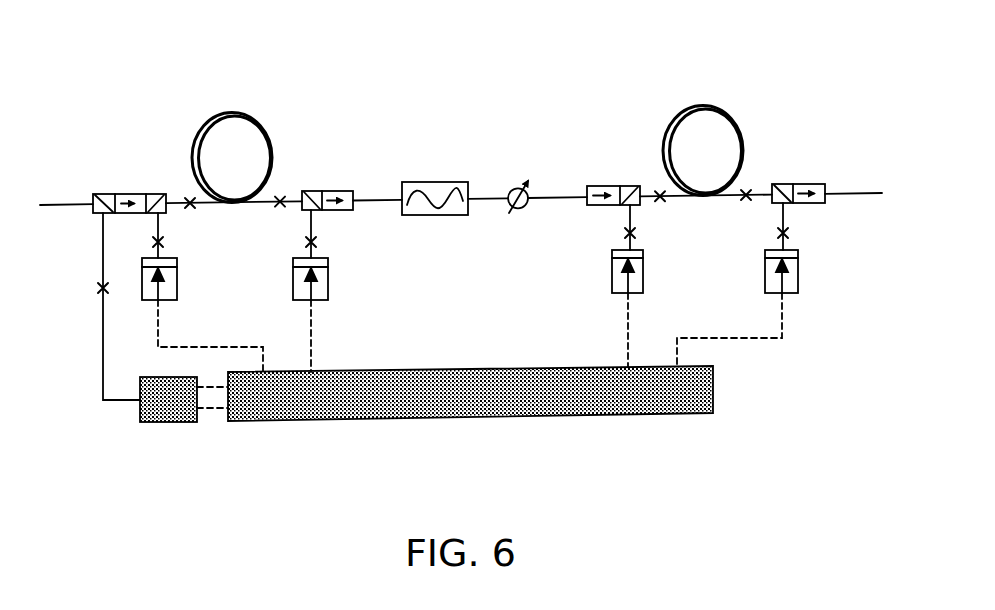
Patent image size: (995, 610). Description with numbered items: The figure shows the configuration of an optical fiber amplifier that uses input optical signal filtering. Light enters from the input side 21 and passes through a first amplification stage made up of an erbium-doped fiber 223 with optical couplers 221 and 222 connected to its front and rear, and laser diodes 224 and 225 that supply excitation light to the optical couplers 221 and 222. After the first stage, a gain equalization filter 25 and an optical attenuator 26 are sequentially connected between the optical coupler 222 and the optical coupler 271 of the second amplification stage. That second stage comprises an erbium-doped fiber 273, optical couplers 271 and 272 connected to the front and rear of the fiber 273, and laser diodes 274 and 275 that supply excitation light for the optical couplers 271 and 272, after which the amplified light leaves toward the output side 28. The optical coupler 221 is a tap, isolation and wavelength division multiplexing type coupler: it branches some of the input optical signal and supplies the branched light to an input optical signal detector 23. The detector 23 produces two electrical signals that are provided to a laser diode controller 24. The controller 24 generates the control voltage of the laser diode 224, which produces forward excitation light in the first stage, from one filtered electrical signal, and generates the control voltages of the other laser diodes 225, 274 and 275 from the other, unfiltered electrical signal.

The input optical fiber 21 is at (44, 203).
The optical coupler 221 is at (143, 193).
The optical coupler 222 is at (330, 190).
The erbium-doped fiber 223 is at (277, 147).
The laser diode 224 is at (177, 283).
The laser diode 225 is at (328, 282).
The gain equalization filter 25 is at (436, 182).
The optical attenuator 26 is at (523, 210).
The optical coupler 271 is at (612, 185).
The optical coupler 272 is at (800, 183).
The erbium-doped fiber 273 is at (726, 105).
The laser diode 274 is at (643, 271).
The laser diode 275 is at (798, 271).
The output optical fiber 28 is at (862, 193).
The input optical signal detector 23 is at (160, 423).
The laser diode controller 24 is at (713, 398).